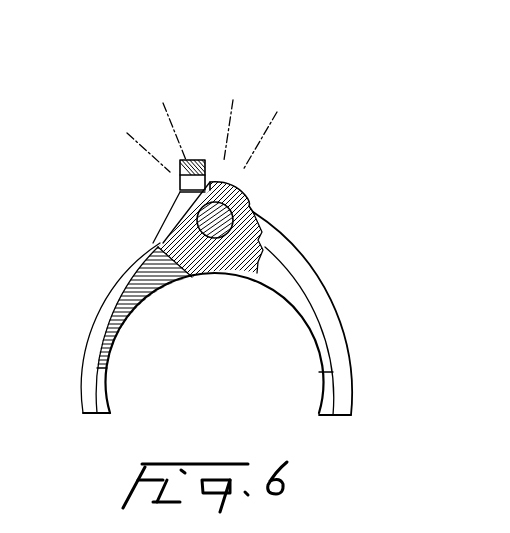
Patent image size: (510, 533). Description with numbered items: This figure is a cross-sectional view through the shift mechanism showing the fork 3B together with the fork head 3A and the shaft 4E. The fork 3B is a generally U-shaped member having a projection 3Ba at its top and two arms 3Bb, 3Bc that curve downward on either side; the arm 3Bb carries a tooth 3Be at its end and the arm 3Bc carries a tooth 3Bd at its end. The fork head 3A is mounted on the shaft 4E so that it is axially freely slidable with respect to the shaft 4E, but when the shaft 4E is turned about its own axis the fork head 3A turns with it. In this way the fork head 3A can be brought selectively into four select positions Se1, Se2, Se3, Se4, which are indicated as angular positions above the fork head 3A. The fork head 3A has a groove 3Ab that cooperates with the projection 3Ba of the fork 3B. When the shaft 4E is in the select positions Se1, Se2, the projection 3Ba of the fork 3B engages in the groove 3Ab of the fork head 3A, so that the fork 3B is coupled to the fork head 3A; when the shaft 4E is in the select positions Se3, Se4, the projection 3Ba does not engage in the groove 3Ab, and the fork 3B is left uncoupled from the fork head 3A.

The fork 3B is at (314, 208).
The projection 3Ba is at (233, 183).
The arm 3Bb is at (315, 297).
The arm 3Bc is at (110, 302).
The tooth 3Bd is at (105, 385).
The tooth 3Be is at (327, 385).
The fork head 3A is at (192, 160).
The groove 3Ab is at (182, 190).
The shaft 4E is at (222, 226).
The select position Se1 is at (277, 112).
The select position Se2 is at (233, 100).
The select position Se3 is at (163, 103).
The select position Se4 is at (127, 133).